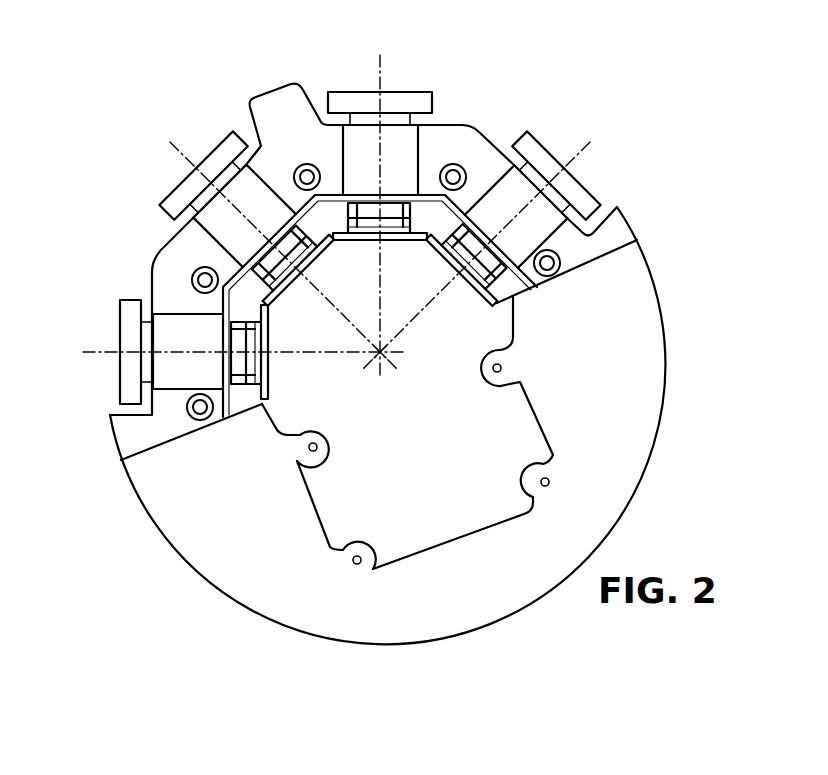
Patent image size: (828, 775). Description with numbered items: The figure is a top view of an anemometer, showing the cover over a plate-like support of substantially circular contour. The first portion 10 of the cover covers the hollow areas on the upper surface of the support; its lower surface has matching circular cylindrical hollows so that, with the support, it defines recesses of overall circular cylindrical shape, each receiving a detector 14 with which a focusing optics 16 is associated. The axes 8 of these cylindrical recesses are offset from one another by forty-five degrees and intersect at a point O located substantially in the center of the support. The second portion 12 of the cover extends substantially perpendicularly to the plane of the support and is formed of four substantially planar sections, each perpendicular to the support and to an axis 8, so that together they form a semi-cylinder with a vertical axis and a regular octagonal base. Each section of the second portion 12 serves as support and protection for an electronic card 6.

The electronic card 6 is at (307, 257).
The axis 8 is at (386, 63).
The first portion 10 is at (175, 265).
The second portion 12 is at (228, 290).
The detector 14 is at (415, 122).
The focusing optics 16 is at (412, 100).
The point O is at (372, 372).